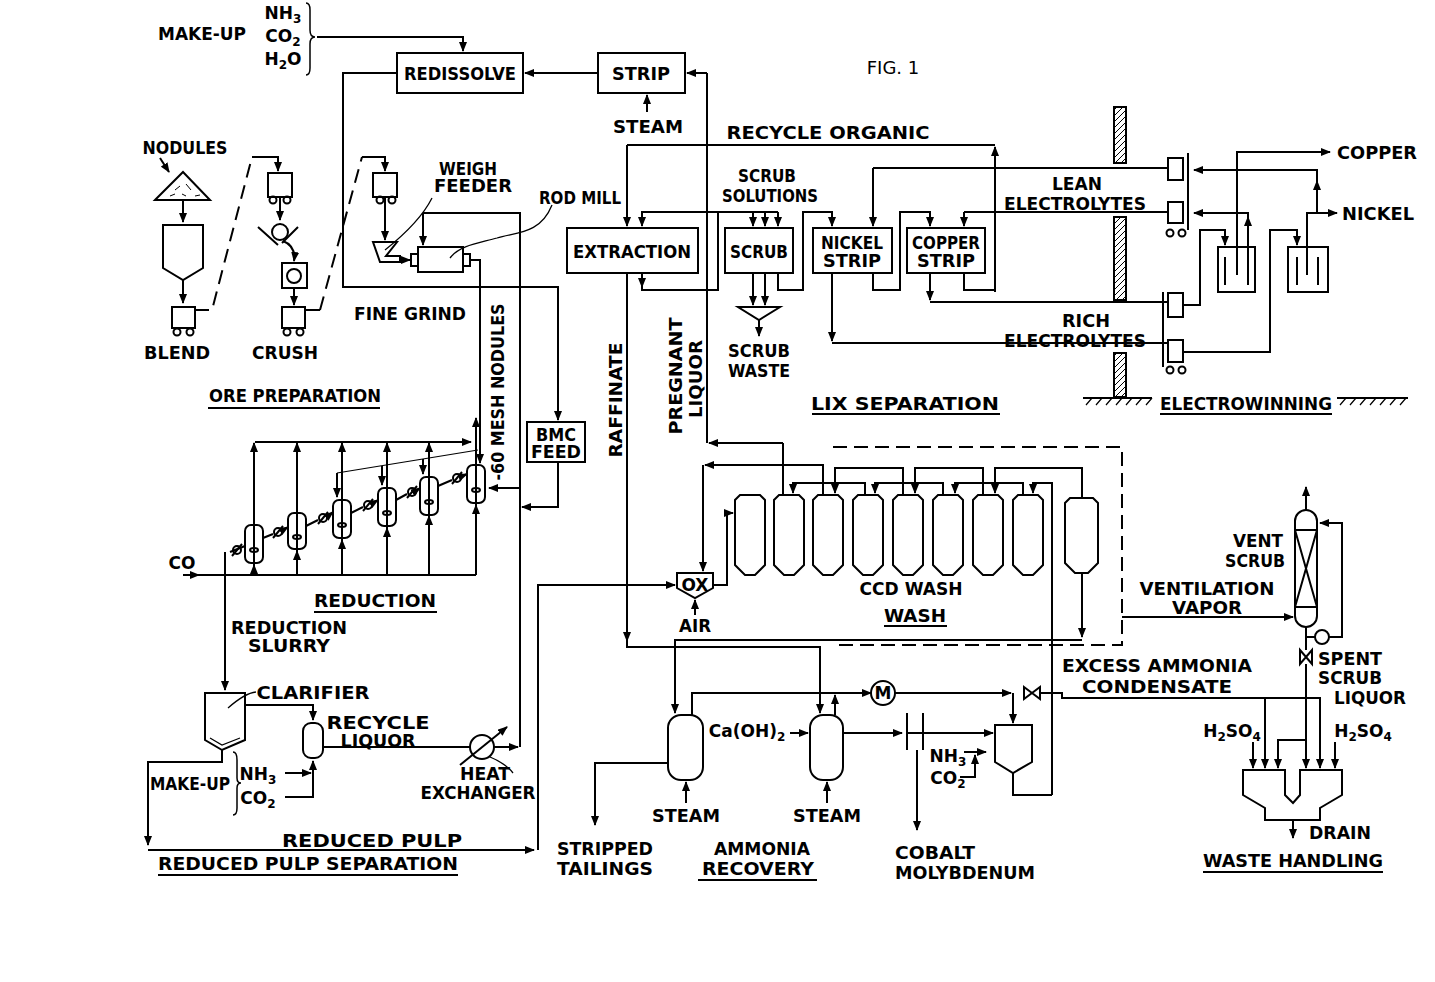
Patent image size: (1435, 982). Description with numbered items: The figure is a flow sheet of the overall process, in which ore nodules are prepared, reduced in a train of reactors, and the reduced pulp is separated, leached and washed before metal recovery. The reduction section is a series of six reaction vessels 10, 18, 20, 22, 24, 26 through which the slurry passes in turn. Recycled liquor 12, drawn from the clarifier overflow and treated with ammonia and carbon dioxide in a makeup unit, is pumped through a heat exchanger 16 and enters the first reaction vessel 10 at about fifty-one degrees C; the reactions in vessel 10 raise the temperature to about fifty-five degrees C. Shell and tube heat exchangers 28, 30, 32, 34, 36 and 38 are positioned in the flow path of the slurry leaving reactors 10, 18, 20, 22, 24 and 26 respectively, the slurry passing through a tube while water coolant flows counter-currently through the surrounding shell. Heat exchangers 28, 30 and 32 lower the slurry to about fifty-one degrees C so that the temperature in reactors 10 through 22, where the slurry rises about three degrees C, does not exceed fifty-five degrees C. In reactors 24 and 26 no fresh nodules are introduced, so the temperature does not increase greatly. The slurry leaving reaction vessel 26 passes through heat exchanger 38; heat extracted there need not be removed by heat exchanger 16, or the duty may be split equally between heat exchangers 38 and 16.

The reaction vessel 10 is at (490, 498).
The recycled liquor 12 is at (523, 561).
The heat exchanger 16 is at (481, 733).
The reaction vessel 18 is at (438, 505).
The reaction vessel 20 is at (396, 516).
The reaction vessel 22 is at (351, 528).
The reaction vessel 24 is at (306, 540).
The reaction vessel 26 is at (263, 553).
The heat exchanger 28 is at (452, 462).
The heat exchanger 30 is at (410, 489).
The heat exchanger 32 is at (367, 502).
The heat exchanger 34 is at (320, 515).
The heat exchanger 36 is at (275, 528).
The heat exchanger 38 is at (235, 547).